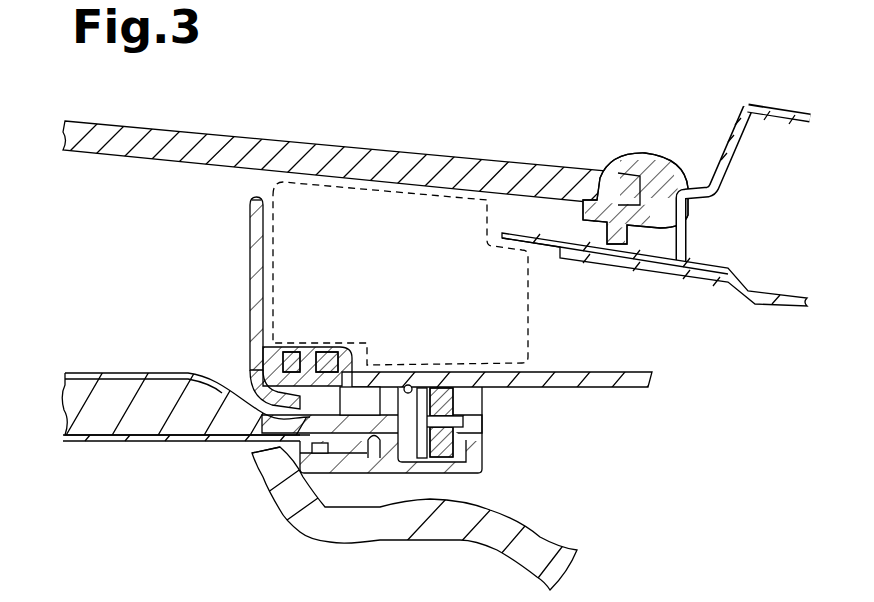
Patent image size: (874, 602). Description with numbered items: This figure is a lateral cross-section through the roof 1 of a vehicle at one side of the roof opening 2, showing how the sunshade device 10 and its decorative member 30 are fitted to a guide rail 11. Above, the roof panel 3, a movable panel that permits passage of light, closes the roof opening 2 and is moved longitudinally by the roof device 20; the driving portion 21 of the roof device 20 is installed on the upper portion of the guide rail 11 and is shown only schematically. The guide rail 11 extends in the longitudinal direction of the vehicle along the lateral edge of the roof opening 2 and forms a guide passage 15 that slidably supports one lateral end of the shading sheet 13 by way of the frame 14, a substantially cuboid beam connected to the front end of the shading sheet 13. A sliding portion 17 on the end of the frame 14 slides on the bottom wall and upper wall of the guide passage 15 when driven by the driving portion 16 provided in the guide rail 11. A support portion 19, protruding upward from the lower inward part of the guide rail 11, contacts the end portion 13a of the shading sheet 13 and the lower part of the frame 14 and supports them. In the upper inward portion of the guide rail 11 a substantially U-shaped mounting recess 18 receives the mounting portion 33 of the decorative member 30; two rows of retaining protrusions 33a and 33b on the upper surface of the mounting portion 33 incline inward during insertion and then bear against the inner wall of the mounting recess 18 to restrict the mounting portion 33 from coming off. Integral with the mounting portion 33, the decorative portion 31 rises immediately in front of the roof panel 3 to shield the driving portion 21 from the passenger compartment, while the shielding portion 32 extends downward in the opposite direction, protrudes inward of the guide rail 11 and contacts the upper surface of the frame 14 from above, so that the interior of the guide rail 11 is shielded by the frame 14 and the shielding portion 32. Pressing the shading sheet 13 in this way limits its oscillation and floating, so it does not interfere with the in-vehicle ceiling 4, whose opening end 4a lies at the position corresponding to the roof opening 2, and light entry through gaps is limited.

The roof 1 is at (763, 111).
The roof opening 2 is at (716, 142).
The roof panel 3 is at (440, 156).
The in-vehicle ceiling 4 is at (262, 490).
The opening end 4a is at (255, 455).
The sunshade device 10 is at (130, 276).
The guide rail 11 is at (479, 398).
The shading sheet 13 is at (130, 443).
The end portion 13a is at (372, 468).
The frame 14 is at (118, 387).
The guide passage 15 is at (407, 384).
The driving portion 16 is at (452, 452).
The sliding portion 17 is at (402, 458).
The mounting recess 18 is at (360, 400).
The support portion 19 is at (321, 456).
The roof device 20 is at (597, 118).
The driving portion 21 is at (533, 298).
The decorative member 30 is at (249, 224).
The decorative portion 31 is at (249, 264).
The shielding portion 32 is at (248, 402).
The mounting portion 33 is at (243, 366).
The retaining protrusion 33a is at (287, 351).
The retaining protrusion 33b is at (332, 356).